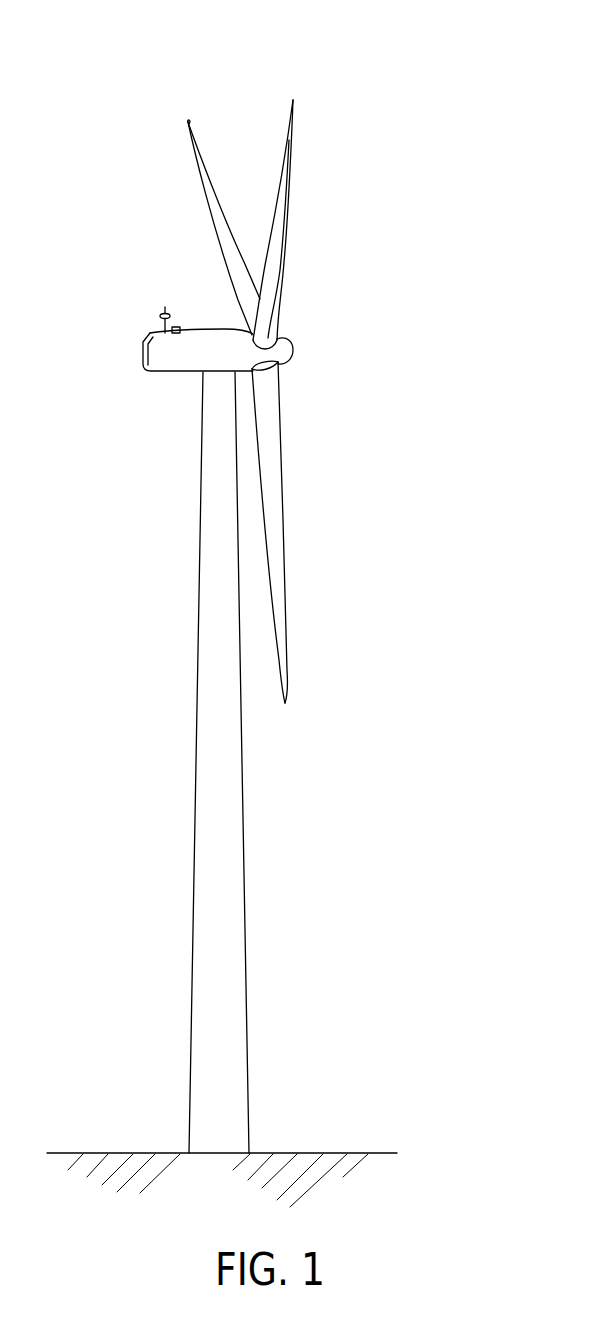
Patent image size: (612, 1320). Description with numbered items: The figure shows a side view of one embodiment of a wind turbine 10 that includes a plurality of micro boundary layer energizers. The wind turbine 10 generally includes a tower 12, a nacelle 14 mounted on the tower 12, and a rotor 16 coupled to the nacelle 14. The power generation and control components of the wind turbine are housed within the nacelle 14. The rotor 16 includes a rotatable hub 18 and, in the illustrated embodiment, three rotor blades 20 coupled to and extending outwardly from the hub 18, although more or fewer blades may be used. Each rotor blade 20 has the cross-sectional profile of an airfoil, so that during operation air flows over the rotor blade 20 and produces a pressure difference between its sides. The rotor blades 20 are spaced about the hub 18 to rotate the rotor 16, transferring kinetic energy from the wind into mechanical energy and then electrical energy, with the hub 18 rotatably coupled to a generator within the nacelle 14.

The wind turbine 10 is at (343, 56).
The tower 12 is at (205, 860).
The nacelle 14 is at (178, 376).
The rotor 16 is at (304, 315).
The hub 18 is at (292, 350).
The rotor blade 20 is at (200, 177).